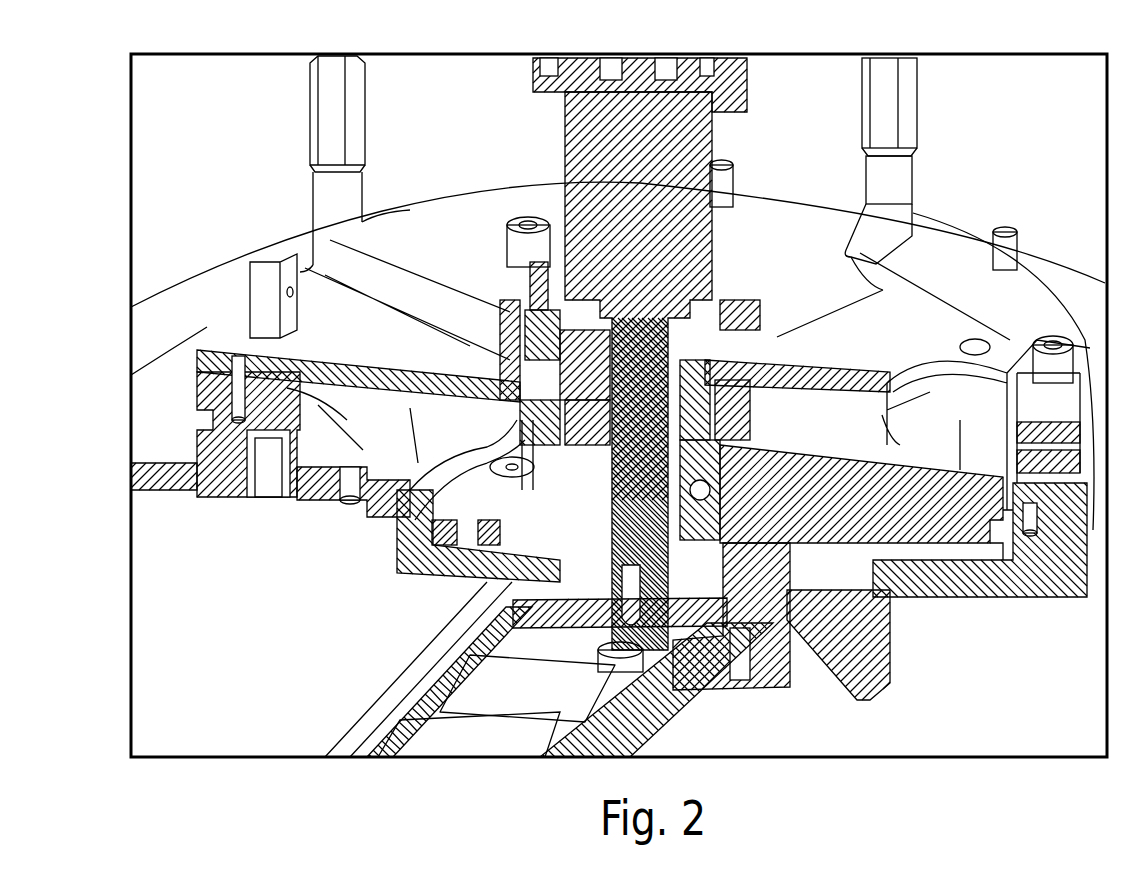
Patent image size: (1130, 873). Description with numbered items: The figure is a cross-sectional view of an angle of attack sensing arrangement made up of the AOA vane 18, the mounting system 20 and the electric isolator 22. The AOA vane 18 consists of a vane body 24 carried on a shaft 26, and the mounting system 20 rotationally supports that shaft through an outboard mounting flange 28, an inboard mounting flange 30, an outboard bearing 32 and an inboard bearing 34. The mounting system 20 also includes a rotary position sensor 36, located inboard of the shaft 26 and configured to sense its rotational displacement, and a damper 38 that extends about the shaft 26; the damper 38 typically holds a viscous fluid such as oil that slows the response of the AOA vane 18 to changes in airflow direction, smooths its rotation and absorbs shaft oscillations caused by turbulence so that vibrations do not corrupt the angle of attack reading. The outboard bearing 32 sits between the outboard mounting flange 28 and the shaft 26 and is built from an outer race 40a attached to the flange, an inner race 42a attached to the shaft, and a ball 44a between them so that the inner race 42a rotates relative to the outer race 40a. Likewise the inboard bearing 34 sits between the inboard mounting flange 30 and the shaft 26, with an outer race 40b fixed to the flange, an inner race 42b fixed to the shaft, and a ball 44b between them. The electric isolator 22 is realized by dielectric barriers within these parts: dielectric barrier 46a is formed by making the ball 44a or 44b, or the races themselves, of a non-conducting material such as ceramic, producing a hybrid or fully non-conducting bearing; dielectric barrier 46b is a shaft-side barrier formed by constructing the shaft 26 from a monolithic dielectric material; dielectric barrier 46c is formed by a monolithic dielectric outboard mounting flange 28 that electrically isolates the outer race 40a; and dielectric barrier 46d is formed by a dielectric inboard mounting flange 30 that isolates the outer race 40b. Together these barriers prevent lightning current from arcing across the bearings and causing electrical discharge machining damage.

The AOA vane 18 is at (360, 697).
The mounting system 20 is at (188, 395).
The electric isolator 22 is at (797, 297).
The vane body 24 is at (583, 757).
The shaft 26 is at (787, 687).
The outboard mounting flange 28 is at (315, 490).
The inboard mounting flange 30 is at (322, 317).
The outboard bearing 32 is at (538, 503).
The inboard bearing 34 is at (510, 327).
The rotary position sensor 36 is at (680, 140).
The damper 38 is at (663, 66).
The outer race 40a is at (430, 553).
The outer race 40b is at (507, 367).
The inner race 42a is at (525, 455).
The inner race 42b is at (590, 340).
The ball 44a is at (490, 448).
The ball 44b is at (500, 307).
The dielectric barrier 46a is at (735, 407).
The dielectric barrier 46b is at (512, 610).
The dielectric barrier 46c is at (960, 593).
The dielectric barrier 46d is at (907, 320).